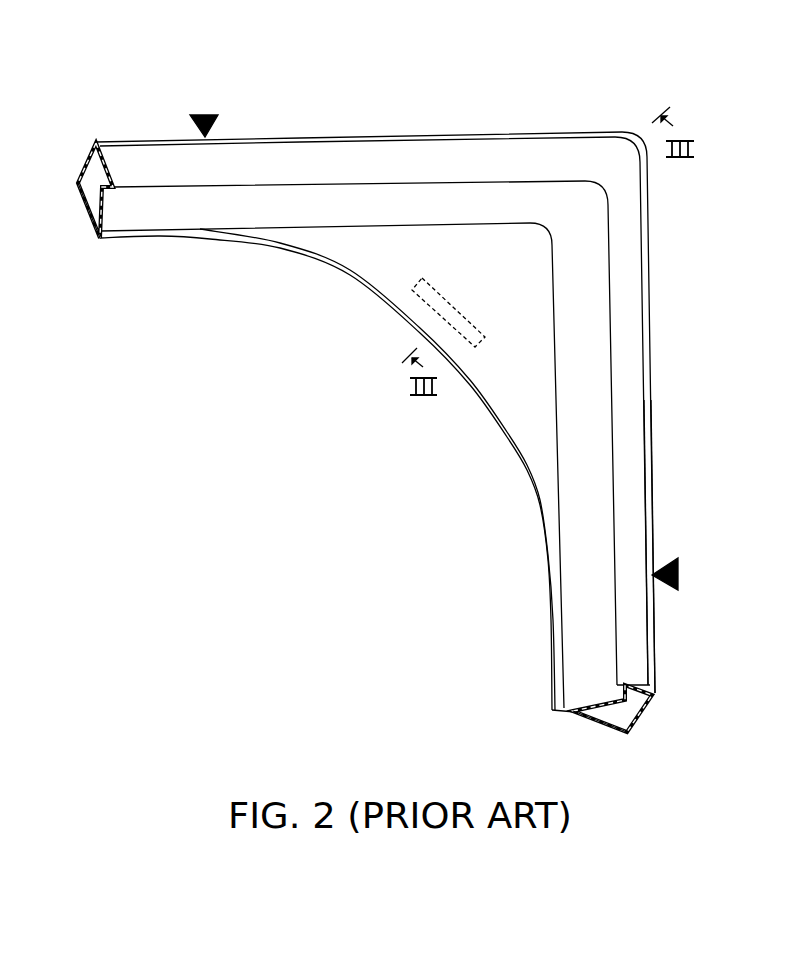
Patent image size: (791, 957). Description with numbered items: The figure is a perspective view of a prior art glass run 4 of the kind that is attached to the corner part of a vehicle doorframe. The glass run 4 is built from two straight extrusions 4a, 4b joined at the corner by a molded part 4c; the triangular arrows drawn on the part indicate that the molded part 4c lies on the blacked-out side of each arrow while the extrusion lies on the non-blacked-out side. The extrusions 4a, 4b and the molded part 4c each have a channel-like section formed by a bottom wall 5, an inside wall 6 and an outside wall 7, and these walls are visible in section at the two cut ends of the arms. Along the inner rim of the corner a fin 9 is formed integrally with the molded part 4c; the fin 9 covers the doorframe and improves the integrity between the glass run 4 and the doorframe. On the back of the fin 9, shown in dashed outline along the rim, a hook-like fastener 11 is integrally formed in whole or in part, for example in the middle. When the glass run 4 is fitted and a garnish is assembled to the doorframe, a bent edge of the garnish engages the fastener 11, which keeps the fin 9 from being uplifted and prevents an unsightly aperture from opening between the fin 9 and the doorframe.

The glass run 4 is at (650, 289).
The extrusion 4a is at (120, 140).
The extrusion 4b is at (656, 622).
The molded part 4c is at (445, 132).
The bottom wall 5 is at (85, 165).
The inside wall 6 is at (87, 198).
The outside wall 7 is at (150, 158).
The fin 9 is at (360, 270).
The hook-like fastener 11 is at (468, 338).